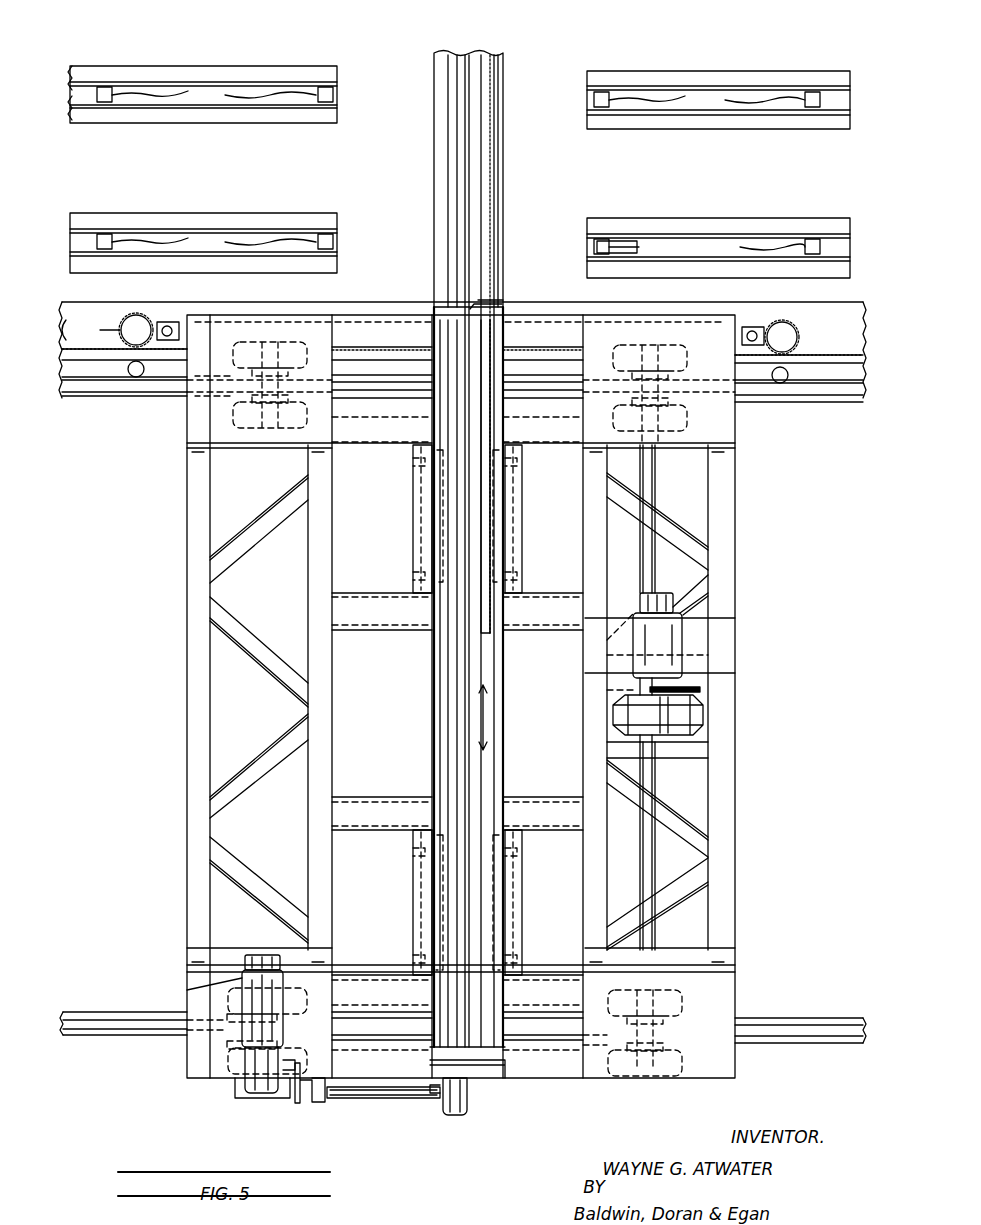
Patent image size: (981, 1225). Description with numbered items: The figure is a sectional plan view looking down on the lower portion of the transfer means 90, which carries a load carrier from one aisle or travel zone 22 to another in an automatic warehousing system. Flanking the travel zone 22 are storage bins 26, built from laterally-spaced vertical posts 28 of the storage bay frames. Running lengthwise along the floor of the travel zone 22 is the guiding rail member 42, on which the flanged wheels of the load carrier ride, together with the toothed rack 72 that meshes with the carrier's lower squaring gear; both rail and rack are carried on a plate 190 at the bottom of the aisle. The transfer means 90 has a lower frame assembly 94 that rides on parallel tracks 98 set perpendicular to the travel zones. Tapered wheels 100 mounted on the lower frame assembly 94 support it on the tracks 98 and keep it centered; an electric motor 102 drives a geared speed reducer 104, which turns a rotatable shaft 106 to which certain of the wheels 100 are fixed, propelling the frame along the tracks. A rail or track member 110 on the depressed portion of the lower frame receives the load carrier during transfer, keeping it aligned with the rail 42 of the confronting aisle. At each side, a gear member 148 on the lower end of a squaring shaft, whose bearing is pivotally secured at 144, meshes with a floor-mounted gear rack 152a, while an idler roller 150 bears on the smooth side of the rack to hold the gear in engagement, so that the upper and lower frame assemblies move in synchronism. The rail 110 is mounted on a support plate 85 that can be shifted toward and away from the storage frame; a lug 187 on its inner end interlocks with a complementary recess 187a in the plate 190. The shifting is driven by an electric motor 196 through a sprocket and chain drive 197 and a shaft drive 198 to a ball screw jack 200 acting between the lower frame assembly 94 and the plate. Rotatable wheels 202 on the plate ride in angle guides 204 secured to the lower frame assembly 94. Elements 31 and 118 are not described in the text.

The aisle or travel zone 22 is at (470, 549).
The storage bins 26 is at (459, 183).
The vertically extending posts 28 is at (459, 172).
The rail support 31 is at (235, 213).
The guiding rail member 42 is at (457, 229).
The toothed rack 72 is at (494, 168).
The carriage frame 85 is at (432, 691).
The transfer means 90 is at (748, 569).
The lower frame assembly 94 is at (490, 628).
The tracks 98 is at (105, 396).
The tapered wheels 100 is at (248, 385).
The electric motor 102 is at (665, 641).
The geared speed reducer 104 is at (680, 712).
The rotatable shaft 106 is at (655, 781).
The rail or track member 110 is at (440, 729).
The contact bar 118 is at (617, 247).
The pivotal securement 144 is at (167, 326).
The gear member 148 is at (122, 328).
The idler roller 150 is at (144, 375).
The gear rack 152a is at (91, 329).
The lug 187 is at (474, 304).
The complementary recess 187a is at (478, 300).
The plate 190 is at (503, 228).
The electric motor 196 is at (245, 993).
The sprocket and chain drive 197 is at (267, 1095).
The shaft drive 198 is at (385, 1100).
The ball screw jack 200 is at (455, 1115).
The rotatable wheels 202 is at (420, 467).
The angle guides 204 is at (413, 535).